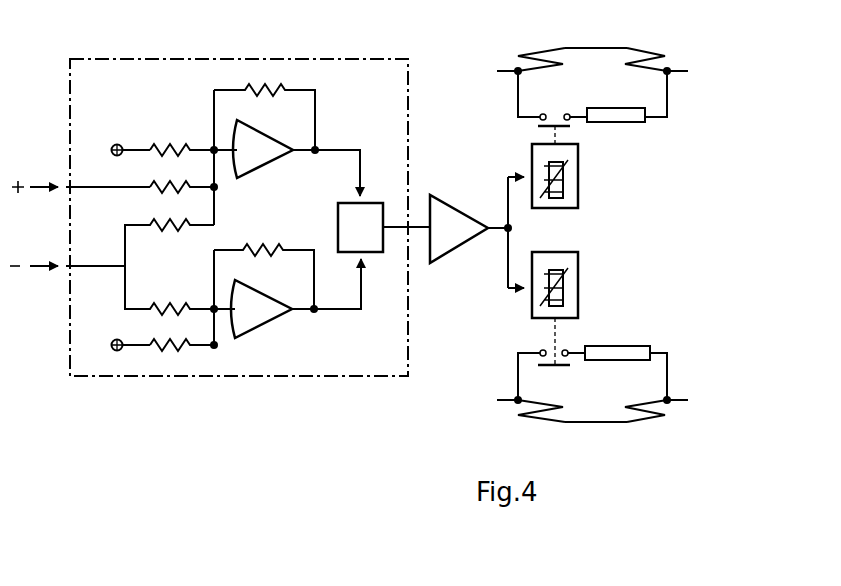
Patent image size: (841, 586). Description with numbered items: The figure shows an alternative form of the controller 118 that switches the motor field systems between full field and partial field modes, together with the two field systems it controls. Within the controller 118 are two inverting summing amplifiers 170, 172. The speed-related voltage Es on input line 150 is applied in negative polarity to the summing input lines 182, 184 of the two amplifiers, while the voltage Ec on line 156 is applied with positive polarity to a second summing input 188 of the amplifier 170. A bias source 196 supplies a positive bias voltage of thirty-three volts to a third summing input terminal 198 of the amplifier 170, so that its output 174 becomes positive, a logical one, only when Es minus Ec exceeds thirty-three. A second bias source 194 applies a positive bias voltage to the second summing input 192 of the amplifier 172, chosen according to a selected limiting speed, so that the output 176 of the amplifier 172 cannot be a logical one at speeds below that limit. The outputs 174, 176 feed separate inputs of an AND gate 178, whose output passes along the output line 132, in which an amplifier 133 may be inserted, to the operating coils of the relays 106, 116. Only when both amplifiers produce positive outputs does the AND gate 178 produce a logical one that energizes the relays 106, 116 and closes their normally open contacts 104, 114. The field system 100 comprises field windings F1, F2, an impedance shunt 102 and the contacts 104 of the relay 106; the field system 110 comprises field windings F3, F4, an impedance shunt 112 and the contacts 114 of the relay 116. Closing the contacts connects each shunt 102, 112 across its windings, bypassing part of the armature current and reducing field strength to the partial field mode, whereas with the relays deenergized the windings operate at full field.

The controller 118 is at (195, 378).
The line carrying voltage Ec 156 is at (58, 190).
The input line carrying voltage Es 150 is at (58, 272).
The bias source 196 is at (122, 156).
The third summing input terminal 198 is at (138, 149).
The second summing input 188 is at (138, 190).
The summing input line 182 is at (138, 228).
The summing input line 184 is at (138, 307).
The bias source 194 is at (118, 352).
The second summing input 192 is at (138, 343).
The summing amplifier 170 is at (281, 208).
The summing amplifier 172 is at (295, 359).
The output 174 is at (335, 148).
The output 176 is at (343, 311).
The AND gate 178 is at (337, 211).
The output line 132 is at (418, 232).
The amplifier 133 is at (458, 248).
The relay 106 is at (578, 173).
The relay 116 is at (578, 265).
The field system 100 is at (616, 93).
The impedance shunt 102 is at (627, 122).
The set of contacts 104 is at (537, 120).
The field system 110 is at (616, 395).
The impedance shunt 112 is at (640, 347).
The set of contacts 114 is at (558, 352).
The field winding F1 is at (547, 50).
The field winding F2 is at (638, 50).
The field winding F3 is at (545, 420).
The field winding F4 is at (643, 420).